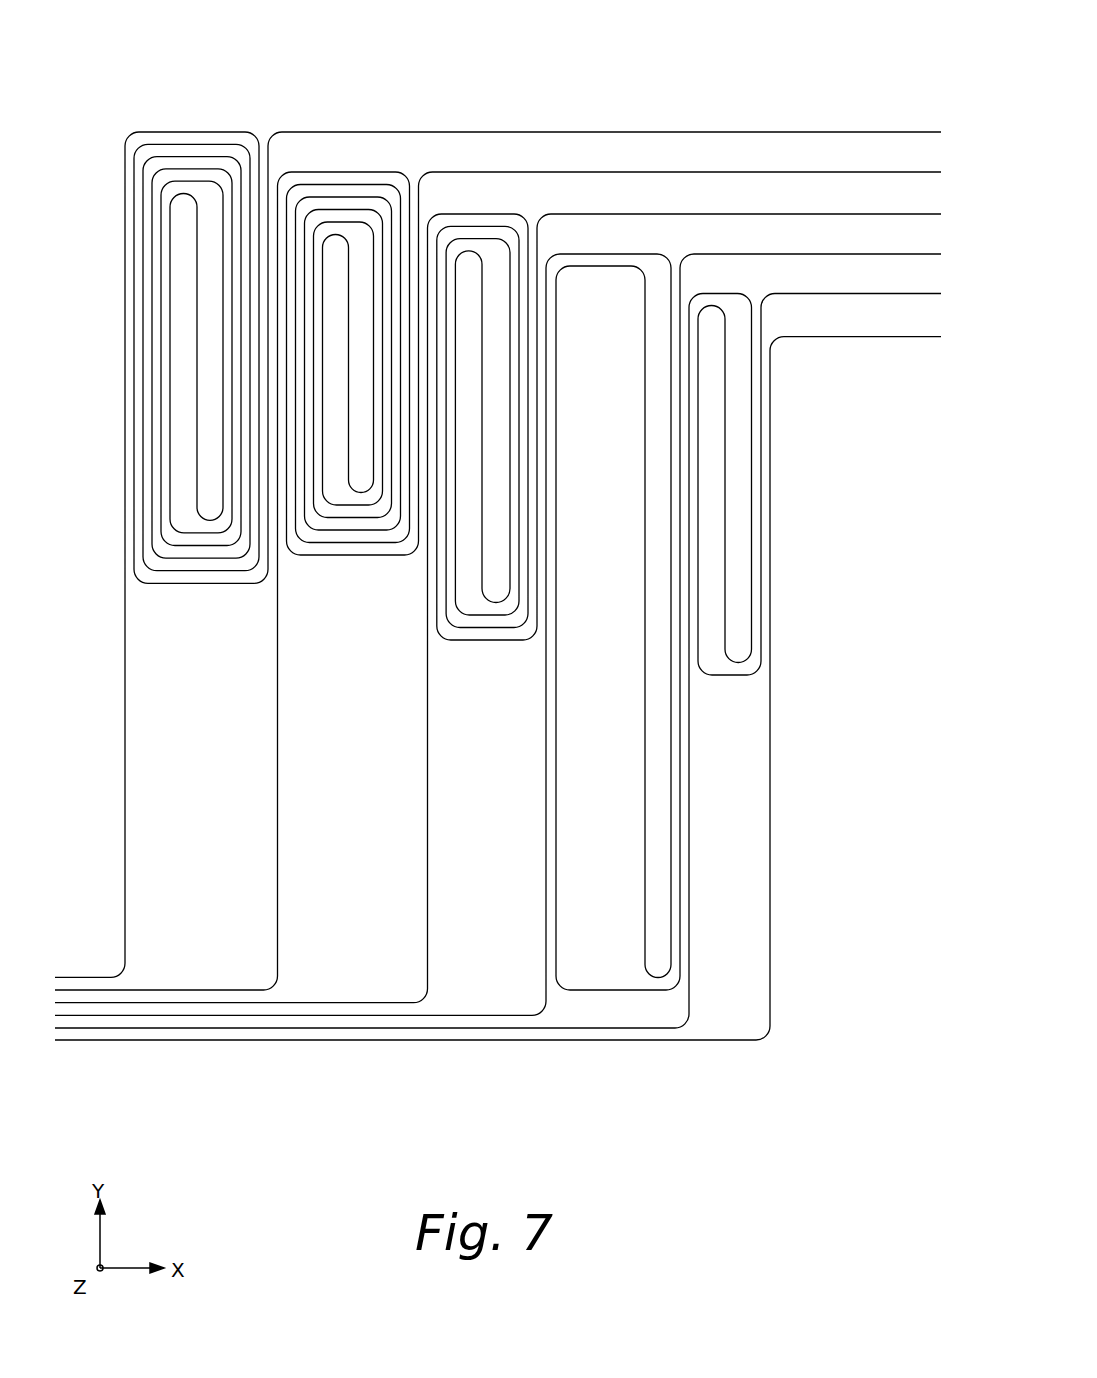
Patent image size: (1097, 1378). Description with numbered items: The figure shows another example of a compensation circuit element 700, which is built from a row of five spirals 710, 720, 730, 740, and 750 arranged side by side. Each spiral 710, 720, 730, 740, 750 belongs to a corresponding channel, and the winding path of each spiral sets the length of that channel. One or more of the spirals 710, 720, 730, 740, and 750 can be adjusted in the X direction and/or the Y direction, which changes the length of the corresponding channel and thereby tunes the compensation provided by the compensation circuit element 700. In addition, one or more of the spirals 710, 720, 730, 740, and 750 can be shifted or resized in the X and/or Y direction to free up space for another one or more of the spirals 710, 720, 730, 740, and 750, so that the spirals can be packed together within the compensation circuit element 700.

The compensation circuit element 700 is at (842, 46).
The spiral 710 is at (197, 131).
The spiral 720 is at (346, 172).
The spiral 730 is at (489, 214).
The spiral 740 is at (612, 254).
The spiral 750 is at (722, 293).